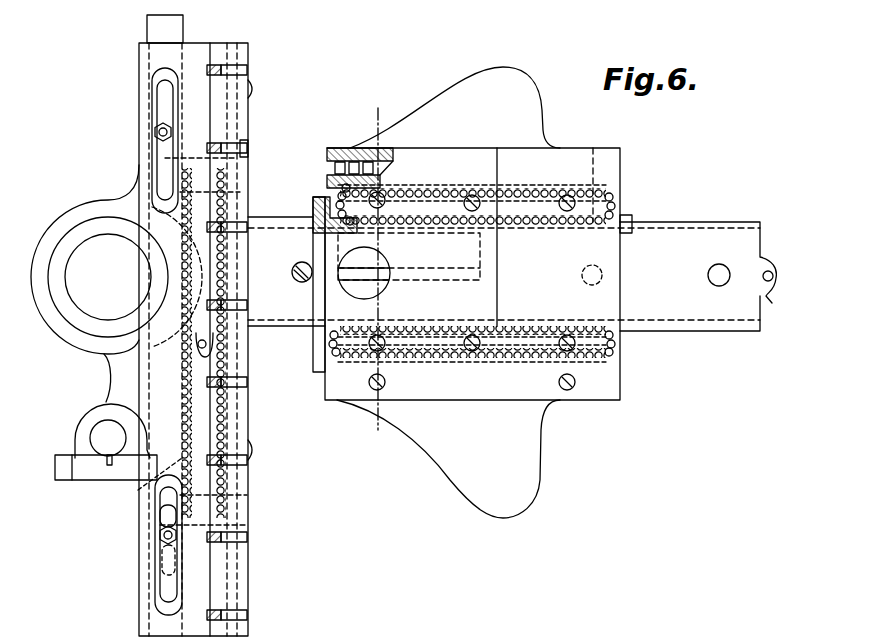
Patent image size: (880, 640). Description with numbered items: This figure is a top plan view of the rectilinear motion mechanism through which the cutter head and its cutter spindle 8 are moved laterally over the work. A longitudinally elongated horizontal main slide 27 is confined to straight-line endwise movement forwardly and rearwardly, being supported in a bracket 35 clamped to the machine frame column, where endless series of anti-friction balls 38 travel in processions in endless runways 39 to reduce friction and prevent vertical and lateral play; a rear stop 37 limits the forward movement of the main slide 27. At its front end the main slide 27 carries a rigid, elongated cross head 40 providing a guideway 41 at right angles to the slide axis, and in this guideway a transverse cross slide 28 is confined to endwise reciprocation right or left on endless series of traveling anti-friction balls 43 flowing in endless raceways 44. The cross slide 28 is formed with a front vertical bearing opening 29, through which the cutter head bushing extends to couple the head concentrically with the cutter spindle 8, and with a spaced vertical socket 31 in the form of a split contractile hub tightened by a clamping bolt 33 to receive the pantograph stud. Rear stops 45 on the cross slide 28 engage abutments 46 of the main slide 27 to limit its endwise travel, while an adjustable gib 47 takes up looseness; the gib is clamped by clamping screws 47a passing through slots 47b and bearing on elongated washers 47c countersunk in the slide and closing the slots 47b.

The cutter spindle 8 is at (364, 269).
The main slide 27 is at (278, 220).
The cross slide 28 is at (117, 368).
The bearing opening 29 is at (108, 277).
The vertical socket 31 is at (100, 437).
The clamping bolt 33 is at (70, 474).
The bracket 35 is at (538, 403).
The rear stop 37 is at (774, 296).
The anti-friction balls 38 is at (334, 192).
The endless runways 39 is at (327, 178).
The cross head 40 is at (258, 400).
The guideway 41 is at (244, 362).
The traveling anti-friction balls 43 is at (275, 507).
The endless raceways 44 is at (233, 423).
The rear stops 45 is at (253, 88).
The abutments 46 is at (258, 215).
The adjustable gib 47 is at (155, 639).
The clamping screws 47a is at (156, 132).
The slots 47b is at (150, 566).
The elongated washers 47c is at (160, 513).